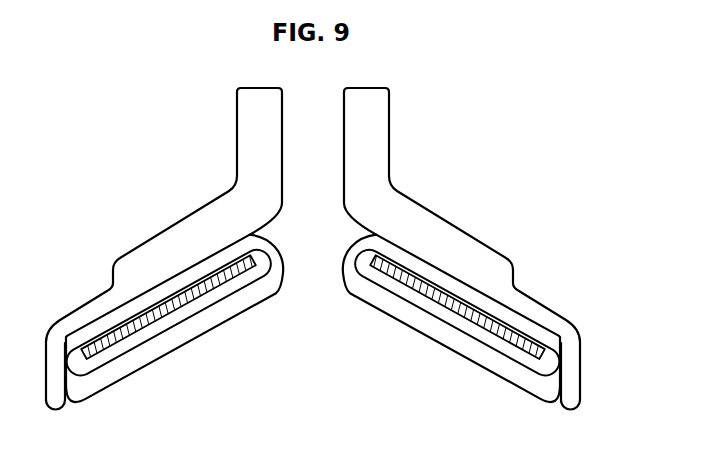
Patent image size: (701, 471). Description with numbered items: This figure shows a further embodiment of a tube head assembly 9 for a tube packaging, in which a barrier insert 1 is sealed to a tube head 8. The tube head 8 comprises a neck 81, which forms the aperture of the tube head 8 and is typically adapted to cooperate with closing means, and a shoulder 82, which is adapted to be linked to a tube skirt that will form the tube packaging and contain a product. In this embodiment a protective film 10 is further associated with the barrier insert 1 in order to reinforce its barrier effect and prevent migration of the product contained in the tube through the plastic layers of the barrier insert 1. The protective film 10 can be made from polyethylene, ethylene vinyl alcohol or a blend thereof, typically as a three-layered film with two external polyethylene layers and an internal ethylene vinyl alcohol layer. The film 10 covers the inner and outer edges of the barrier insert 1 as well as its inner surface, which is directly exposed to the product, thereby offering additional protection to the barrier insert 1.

The barrier insert 1 is at (187, 330).
The tube head 8 is at (459, 225).
The tube head assembly 9 is at (313, 249).
The protective film 10 is at (225, 312).
The neck 81 is at (250, 138).
The shoulder 82 is at (160, 256).